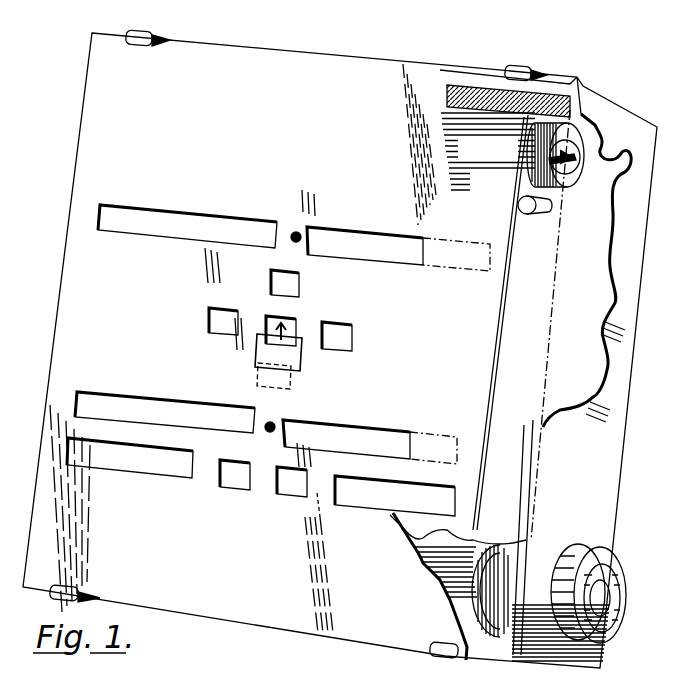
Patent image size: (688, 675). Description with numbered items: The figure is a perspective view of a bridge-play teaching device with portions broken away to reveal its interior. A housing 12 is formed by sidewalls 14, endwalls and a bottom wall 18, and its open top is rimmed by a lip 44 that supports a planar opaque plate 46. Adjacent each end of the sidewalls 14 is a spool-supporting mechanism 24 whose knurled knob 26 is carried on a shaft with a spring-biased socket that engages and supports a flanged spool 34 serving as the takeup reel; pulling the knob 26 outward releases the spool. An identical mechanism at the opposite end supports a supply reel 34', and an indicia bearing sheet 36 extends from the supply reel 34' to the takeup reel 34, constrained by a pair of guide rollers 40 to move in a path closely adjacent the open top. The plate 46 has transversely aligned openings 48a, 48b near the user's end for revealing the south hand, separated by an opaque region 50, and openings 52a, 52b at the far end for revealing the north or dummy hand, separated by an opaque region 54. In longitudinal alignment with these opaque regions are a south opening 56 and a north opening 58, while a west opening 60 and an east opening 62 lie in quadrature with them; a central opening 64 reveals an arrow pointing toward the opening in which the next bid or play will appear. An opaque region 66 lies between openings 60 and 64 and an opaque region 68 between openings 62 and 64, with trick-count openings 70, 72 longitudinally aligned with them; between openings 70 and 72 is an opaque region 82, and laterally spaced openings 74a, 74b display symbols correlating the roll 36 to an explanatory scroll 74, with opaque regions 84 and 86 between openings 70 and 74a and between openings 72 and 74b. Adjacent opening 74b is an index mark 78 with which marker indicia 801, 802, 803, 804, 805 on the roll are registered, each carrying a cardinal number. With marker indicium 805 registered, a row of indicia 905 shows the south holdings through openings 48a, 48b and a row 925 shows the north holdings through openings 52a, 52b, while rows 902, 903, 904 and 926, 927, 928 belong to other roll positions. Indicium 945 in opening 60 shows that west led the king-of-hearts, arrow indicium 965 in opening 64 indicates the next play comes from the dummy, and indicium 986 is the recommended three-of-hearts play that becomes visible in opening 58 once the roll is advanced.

The housing 12 is at (73, 70).
The sidewalls 14 is at (612, 288).
The bottom wall 18 is at (564, 325).
The spool-supporting mechanism 24 is at (588, 141).
The knurled knob 26 is at (604, 568).
The flanged spool (takeup reel) 34 is at (563, 173).
The supply reel 34' is at (460, 591).
The indicia bearing sheet (roll) 36 is at (488, 151).
The guide rollers 40 is at (528, 201).
The lip 44 is at (551, 84).
The planar opaque plate 46 is at (353, 75).
The opening 48a is at (101, 400).
The opening 48b is at (342, 425).
The opaque region 50 is at (272, 418).
The opening 52a is at (128, 211).
The opening 52b is at (348, 231).
The opaque region 54 is at (296, 231).
The south opening 56 is at (290, 384).
The north opening 58 is at (303, 283).
The west opening 60 is at (228, 318).
The east opening 62 is at (347, 323).
The opening 64 is at (293, 325).
The opaque region 66 is at (252, 327).
The opaque region 68 is at (314, 337).
The opening 70 is at (231, 490).
The opening 72 is at (292, 499).
The scroll 74 is at (440, 527).
The opening 74a is at (112, 471).
The opening 74b is at (348, 505).
The index mark 78 is at (455, 520).
The marker indicium 801 is at (492, 213).
The marker indicium 802 is at (490, 284).
The marker indicium 803 is at (480, 350).
The marker indicium 804 is at (457, 421).
The marker indicium 805 is at (453, 503).
The opaque region 82 is at (262, 483).
The opaque region 84 is at (208, 478).
The opaque region 86 is at (330, 513).
The row of indicia 902 is at (462, 232).
The row of indicia 903 is at (458, 300).
The row of indicia 904 is at (444, 370).
The row of indicia 905 is at (430, 447).
The row of indicia 925 is at (468, 251).
The row of indicia 926 is at (458, 325).
The row of indicia 927 is at (448, 393).
The row of indicia 928 is at (433, 473).
The indicium 945 is at (234, 337).
The arrow indicium 965 is at (298, 347).
The indicium 986 is at (262, 355).